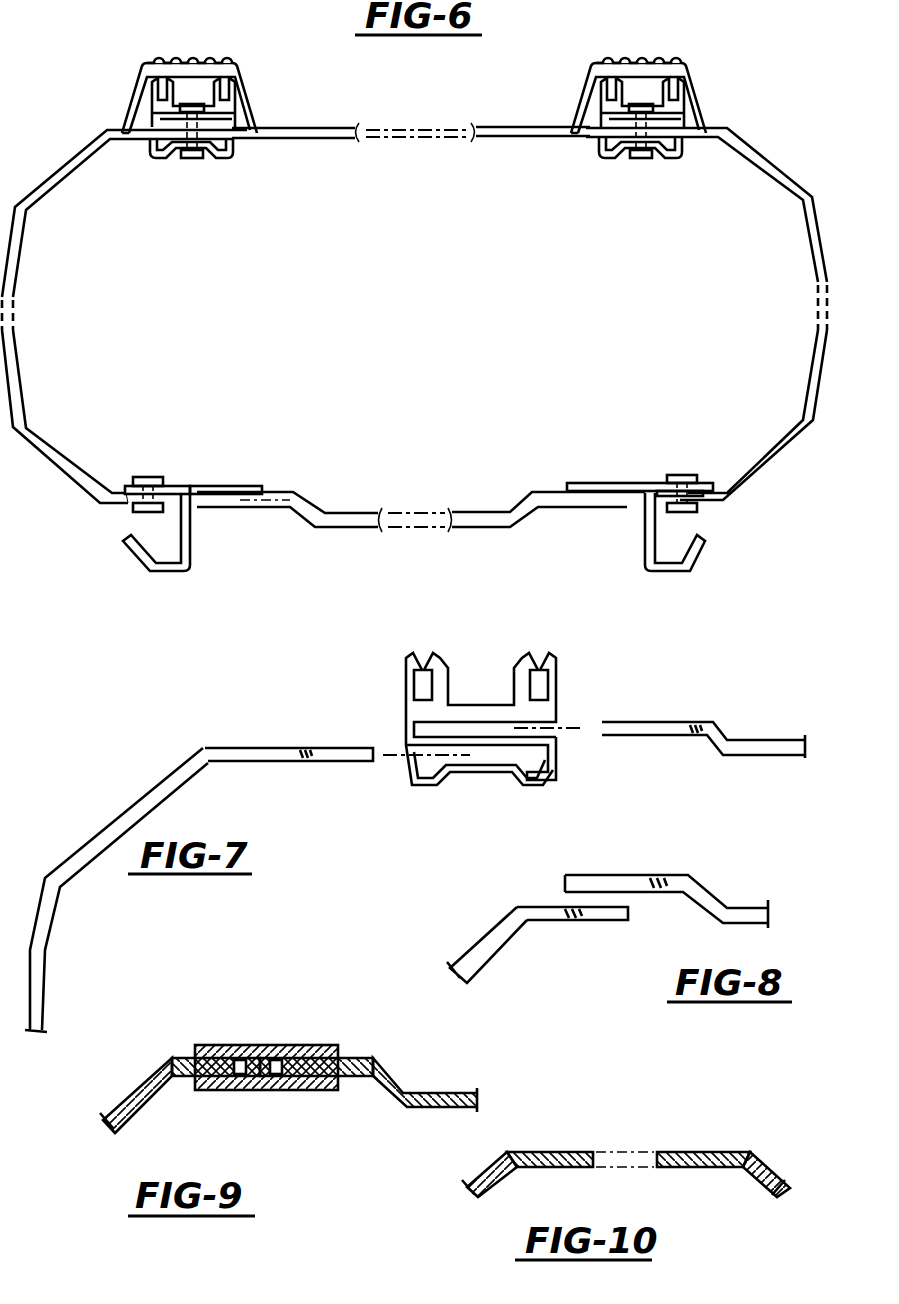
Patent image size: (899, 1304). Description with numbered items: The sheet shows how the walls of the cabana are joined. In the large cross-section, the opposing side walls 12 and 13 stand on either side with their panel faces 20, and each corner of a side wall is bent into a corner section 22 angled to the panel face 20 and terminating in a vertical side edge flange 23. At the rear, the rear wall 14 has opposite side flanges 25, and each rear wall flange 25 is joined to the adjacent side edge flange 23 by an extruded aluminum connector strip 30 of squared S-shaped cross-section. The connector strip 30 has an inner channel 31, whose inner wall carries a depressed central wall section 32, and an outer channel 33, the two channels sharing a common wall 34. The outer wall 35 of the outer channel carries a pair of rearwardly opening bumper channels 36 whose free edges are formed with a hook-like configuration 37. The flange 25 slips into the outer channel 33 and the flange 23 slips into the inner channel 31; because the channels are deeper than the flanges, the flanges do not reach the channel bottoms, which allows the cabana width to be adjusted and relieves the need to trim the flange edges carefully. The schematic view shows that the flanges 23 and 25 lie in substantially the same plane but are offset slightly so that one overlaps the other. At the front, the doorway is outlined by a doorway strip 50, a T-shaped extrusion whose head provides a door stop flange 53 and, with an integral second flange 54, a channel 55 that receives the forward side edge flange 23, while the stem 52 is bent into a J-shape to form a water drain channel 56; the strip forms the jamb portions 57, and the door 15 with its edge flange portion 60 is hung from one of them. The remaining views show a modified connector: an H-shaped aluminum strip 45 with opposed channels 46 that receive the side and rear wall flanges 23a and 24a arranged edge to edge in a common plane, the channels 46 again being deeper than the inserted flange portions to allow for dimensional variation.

In FIG. 6, the side wall 12 is at (790, 363).
In FIG. 6, the side wall 13 is at (40, 395).
In FIG. 6, the rear wall 14 is at (330, 128).
In FIG. 7, the rear wall 14 is at (780, 740).
In FIG. 8, the rear wall 14 is at (758, 908).
In FIG. 10, the rear wall 14 is at (770, 1170).
In FIG. 6, the door 15 is at (330, 518).
In FIG. 6, the panel face 20 is at (812, 240).
In FIG. 7, the panel face 20 is at (44, 960).
In FIG. 9, the panel face 20 is at (284, 1050).
In FIG. 6, the corner section 22 is at (765, 160).
In FIG. 7, the corner section 22 is at (172, 775).
In FIG. 8, the corner section 22 is at (495, 955).
In FIG. 9, the corner section 22 is at (490, 1168).
In FIG. 10, the corner section 22 is at (500, 1162).
In FIG. 6, the side edge flange 23 is at (697, 126).
In FIG. 7, the side edge flange 23 is at (278, 748).
In FIG. 8, the side edge flange 23 is at (612, 921).
In FIG. 9, the side wall flange 23a is at (215, 1058).
In FIG. 10, the side wall flange 23a is at (578, 1152).
In FIG. 9, the rear wall flange 24a is at (325, 1058).
In FIG. 10, the rear wall flange 24a is at (705, 1152).
In FIG. 7, the rear wall side flange 25 is at (665, 722).
In FIG. 8, the rear wall side flange 25 is at (675, 876).
In FIG. 6, the connector strip 30 is at (172, 573).
In FIG. 7, the connector strip 30 is at (395, 735).
In FIG. 7, the inner channel 31 is at (395, 765).
In FIG. 7, the depressed central wall section 32 is at (478, 786).
In FIG. 7, the outer channel 33 is at (558, 726).
In FIG. 7, the common wall 34 is at (550, 760).
In FIG. 7, the outer wall 35 is at (480, 705).
In FIG. 7, the bumper channel 36 is at (406, 698).
In FIG. 7, the hook-like configuration 37 is at (418, 655).
In FIG. 9, the modified connector strip 45 is at (272, 1045).
In FIG. 9, the channel 46 is at (222, 1090).
In FIG. 6, the doorway strip 50 is at (198, 475).
In FIG. 6, the stem 52 is at (138, 478).
In FIG. 6, the door stop flange 53 is at (230, 486).
In FIG. 6, the second flange 54 is at (128, 500).
In FIG. 6, the channel 55 is at (697, 508).
In FIG. 6, the water drain channel 56 is at (125, 540).
In FIG. 6, the jamb portion 57 is at (208, 528).
In FIG. 6, the edge flange portion 60 is at (250, 500).